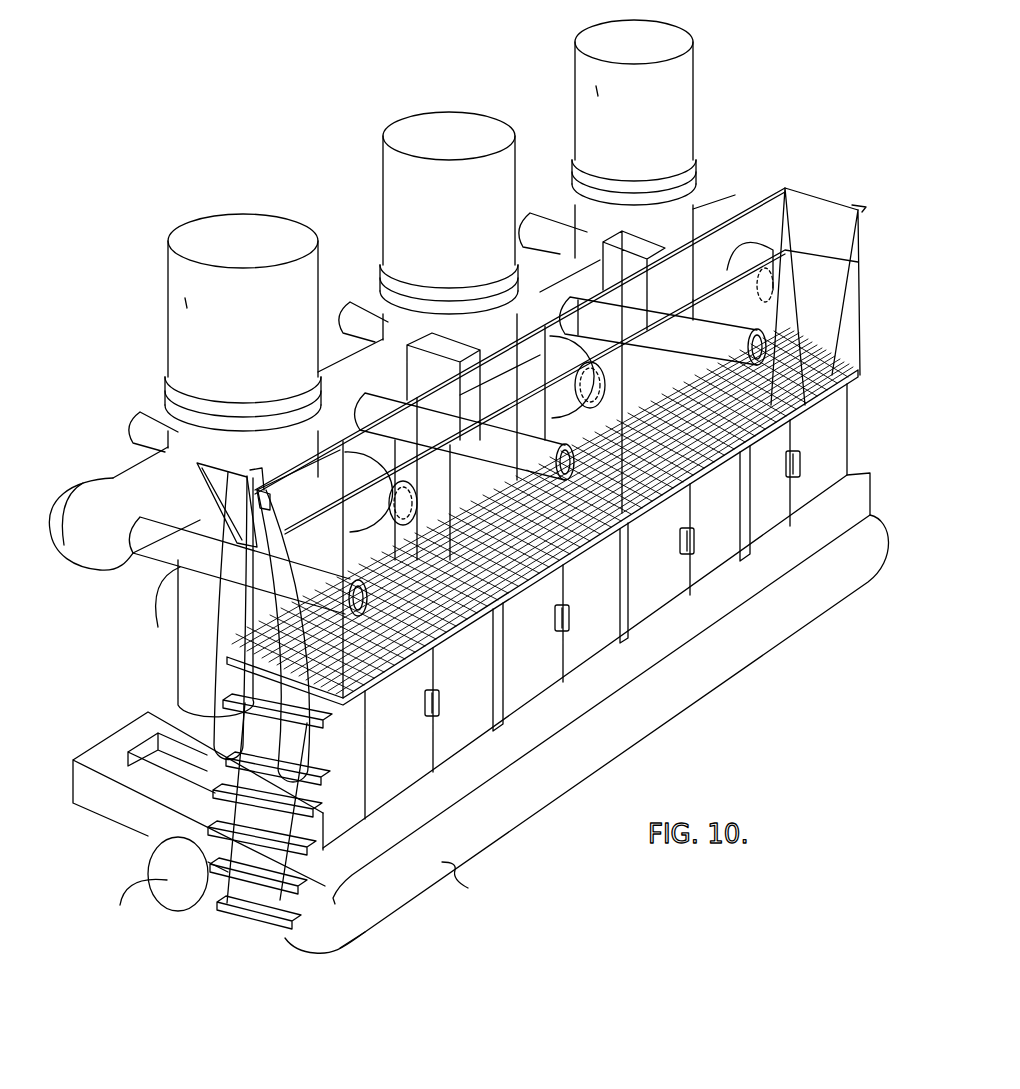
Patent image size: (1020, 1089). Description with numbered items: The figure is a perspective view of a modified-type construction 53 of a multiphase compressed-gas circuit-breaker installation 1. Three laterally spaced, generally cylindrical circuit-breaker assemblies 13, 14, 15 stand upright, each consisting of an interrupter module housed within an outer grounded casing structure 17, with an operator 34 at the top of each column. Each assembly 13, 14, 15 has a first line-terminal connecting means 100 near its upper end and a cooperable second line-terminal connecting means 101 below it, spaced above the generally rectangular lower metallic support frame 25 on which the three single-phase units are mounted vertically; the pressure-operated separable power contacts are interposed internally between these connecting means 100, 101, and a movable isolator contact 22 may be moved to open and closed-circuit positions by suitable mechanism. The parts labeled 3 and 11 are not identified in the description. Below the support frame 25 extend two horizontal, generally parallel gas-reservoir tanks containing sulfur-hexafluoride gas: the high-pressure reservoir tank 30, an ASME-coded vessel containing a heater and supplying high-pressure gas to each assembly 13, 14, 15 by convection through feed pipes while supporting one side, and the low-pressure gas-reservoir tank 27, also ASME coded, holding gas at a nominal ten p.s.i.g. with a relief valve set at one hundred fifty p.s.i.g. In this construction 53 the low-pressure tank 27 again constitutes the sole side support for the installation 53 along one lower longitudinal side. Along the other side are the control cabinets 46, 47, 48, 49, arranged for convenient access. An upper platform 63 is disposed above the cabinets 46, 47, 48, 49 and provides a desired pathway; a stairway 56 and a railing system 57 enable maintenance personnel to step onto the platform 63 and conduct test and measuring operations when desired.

The circuit-breaker installation 1 is at (376, 168).
The modified-type construction 53 is at (720, 119).
The circuit-breaker assembly 13 is at (258, 338).
The circuit-breaker assembly 14 is at (465, 230).
The circuit-breaker assembly 15 is at (651, 126).
The operator 34 is at (186, 302).
The casing structure 17 is at (178, 645).
The manifold pipe 11 is at (213, 580).
The first line-terminal connecting means 100 is at (173, 597).
The second line-terminal connecting means 101 is at (327, 470).
The discharge pipe 3 is at (160, 565).
The movable isolator contact 22 is at (350, 594).
The railing system 57 is at (823, 237).
The upper platform 63 is at (664, 470).
The control cabinet 46 is at (416, 760).
The control cabinet 47 is at (545, 676).
The control cabinet 48 is at (673, 590).
The control cabinet 49 is at (785, 508).
The support frame 25 is at (740, 667).
The low-pressure gas-reservoir tank 27 is at (362, 918).
The high-pressure reservoir tank 30 is at (150, 862).
The stairway 56 is at (303, 800).